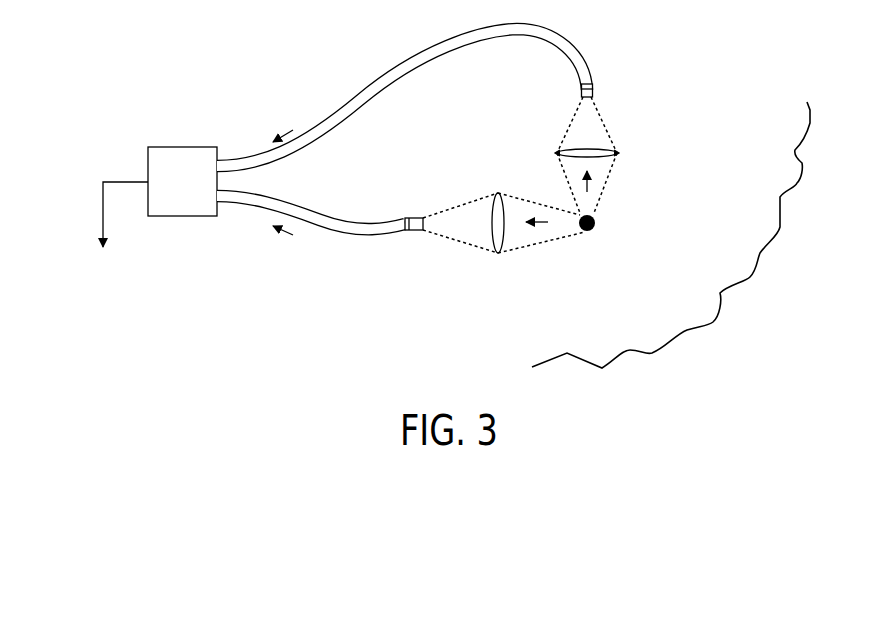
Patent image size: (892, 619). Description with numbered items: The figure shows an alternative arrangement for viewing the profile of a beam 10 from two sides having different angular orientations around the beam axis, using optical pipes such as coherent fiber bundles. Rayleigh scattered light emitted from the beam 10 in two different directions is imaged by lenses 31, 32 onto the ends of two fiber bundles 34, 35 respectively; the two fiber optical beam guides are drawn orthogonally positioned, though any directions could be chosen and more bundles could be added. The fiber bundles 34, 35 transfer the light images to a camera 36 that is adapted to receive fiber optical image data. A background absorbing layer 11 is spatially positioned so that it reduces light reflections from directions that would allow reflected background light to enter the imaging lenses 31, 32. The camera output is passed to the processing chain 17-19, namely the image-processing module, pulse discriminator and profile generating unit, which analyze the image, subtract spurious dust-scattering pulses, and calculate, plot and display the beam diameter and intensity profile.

The beam 10 is at (598, 224).
The background absorbing layer 11 is at (753, 276).
The image-processing module, pulse discriminator and profile generating unit 17-19 is at (110, 230).
The lens 31 is at (614, 151).
The lens 32 is at (502, 252).
The fiber bundle 34 is at (572, 32).
The fiber bundle 35 is at (348, 240).
The camera 36 is at (183, 216).